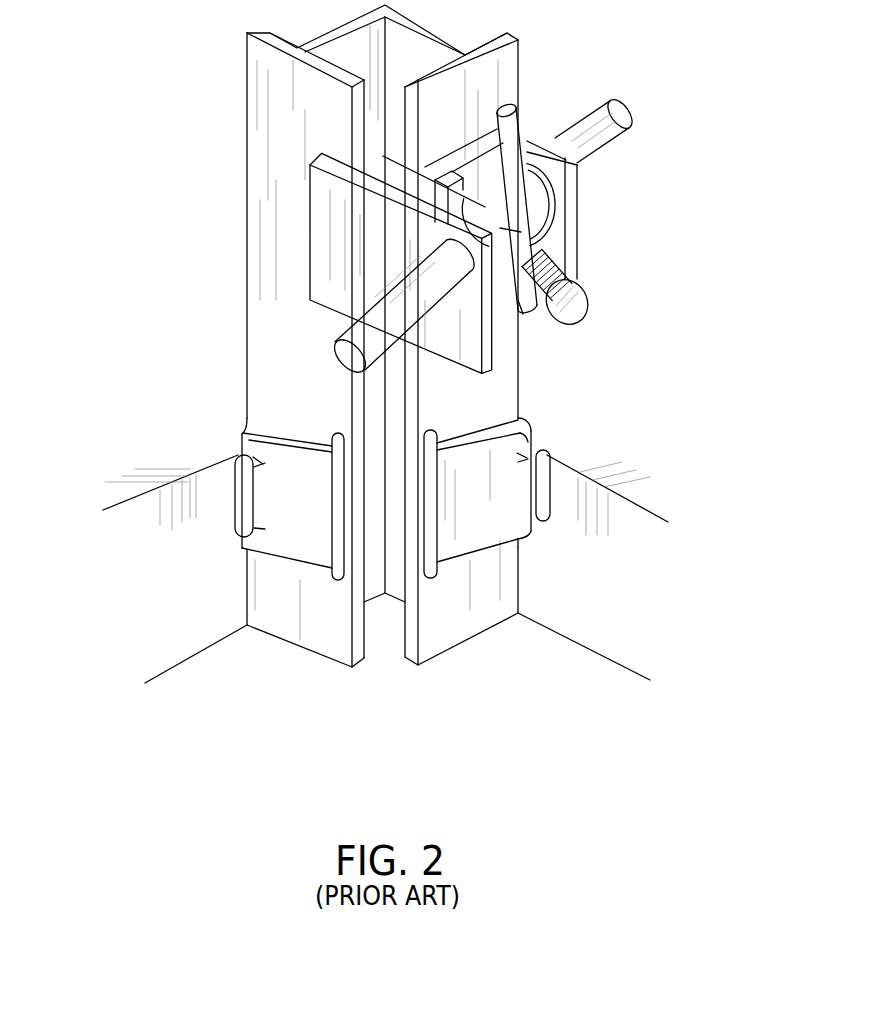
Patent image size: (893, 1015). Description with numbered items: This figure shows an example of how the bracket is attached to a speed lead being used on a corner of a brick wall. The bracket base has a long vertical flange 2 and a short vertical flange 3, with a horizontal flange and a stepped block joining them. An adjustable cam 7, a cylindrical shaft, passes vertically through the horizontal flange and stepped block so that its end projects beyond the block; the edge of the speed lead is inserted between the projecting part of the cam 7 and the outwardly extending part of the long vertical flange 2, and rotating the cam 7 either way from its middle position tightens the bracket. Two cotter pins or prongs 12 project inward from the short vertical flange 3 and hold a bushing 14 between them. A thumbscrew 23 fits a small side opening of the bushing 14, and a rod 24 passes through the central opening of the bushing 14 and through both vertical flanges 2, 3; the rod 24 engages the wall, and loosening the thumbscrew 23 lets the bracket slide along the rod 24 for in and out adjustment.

The long vertical flange 2 is at (323, 350).
The short vertical flange 3 is at (578, 227).
The adjustable cam 7 is at (523, 314).
The cotter pins or prongs 12 is at (535, 161).
The bushing 14 is at (548, 195).
The thumbscrew 23 is at (577, 312).
The rod 24 is at (609, 100).